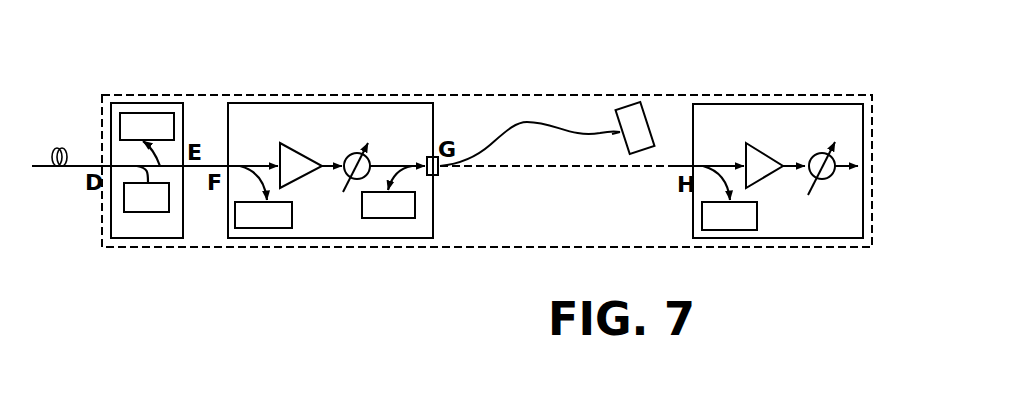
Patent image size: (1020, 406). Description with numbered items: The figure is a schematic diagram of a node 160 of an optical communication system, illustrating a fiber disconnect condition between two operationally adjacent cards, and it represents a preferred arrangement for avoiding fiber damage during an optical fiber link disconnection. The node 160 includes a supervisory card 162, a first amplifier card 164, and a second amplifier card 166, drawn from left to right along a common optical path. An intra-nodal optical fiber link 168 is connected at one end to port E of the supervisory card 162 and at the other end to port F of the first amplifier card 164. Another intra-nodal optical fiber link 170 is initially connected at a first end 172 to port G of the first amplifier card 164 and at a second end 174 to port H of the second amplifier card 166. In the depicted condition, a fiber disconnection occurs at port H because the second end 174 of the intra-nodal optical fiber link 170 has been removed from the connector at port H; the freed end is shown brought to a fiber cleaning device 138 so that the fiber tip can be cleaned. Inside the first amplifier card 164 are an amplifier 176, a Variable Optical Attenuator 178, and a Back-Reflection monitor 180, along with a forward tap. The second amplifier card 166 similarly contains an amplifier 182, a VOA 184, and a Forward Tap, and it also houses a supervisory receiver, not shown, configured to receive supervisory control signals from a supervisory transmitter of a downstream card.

The fiber cleaning device 138 is at (620, 105).
The node 160 is at (466, 92).
The supervisory card 162 is at (147, 103).
The first amplifier card 164 is at (330, 167).
The second amplifier card 166 is at (778, 136).
The intra-nodal optical fiber link 168 is at (200, 167).
The intra-nodal optical fiber link 170 is at (527, 122).
The first end 172 is at (440, 172).
The second end 174 is at (620, 132).
The amplifier 176 is at (308, 176).
The Variable Optical Attenuator 178 is at (348, 155).
The Back-Reflection monitor 180 is at (381, 218).
The amplifier 182 is at (746, 153).
The Variable Optical Attenuator 184 is at (812, 156).